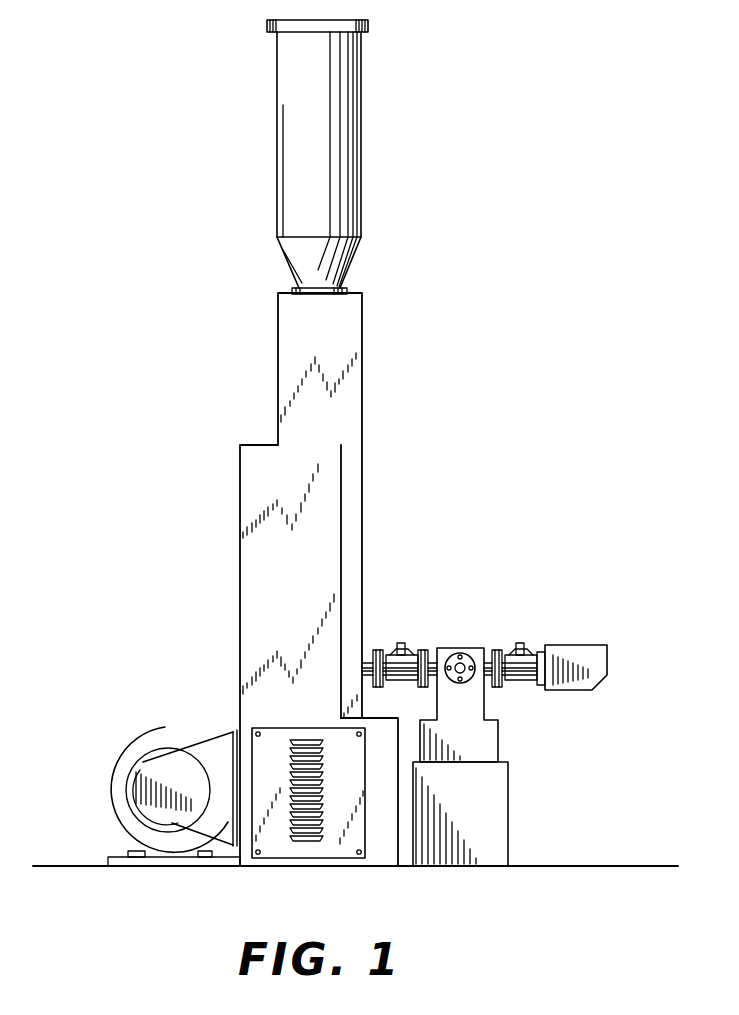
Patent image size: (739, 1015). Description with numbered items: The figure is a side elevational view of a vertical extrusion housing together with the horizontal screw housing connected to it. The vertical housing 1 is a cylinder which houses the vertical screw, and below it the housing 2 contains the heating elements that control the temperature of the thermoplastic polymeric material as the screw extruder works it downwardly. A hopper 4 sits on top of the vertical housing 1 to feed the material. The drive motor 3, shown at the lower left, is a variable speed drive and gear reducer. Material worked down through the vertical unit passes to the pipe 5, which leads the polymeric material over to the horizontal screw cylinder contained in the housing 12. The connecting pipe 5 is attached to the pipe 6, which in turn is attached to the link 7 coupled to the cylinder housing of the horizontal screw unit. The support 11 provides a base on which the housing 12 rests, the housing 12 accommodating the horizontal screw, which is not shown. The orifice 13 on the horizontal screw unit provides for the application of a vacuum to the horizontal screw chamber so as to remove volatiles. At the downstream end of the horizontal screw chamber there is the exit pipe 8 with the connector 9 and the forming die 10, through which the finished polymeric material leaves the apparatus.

The vertical housing 1 is at (363, 358).
The housing 2 is at (240, 604).
The drive motor 3 is at (174, 732).
The hopper 4 is at (288, 98).
The pipe 5 is at (366, 660).
The pipe 6 is at (408, 655).
The link 7 is at (429, 655).
The exit pipe 8 is at (489, 655).
The connector 9 is at (528, 655).
The forming die 10 is at (607, 652).
The support 11 is at (500, 795).
The housing 12 is at (490, 734).
The orifice 13 is at (462, 658).